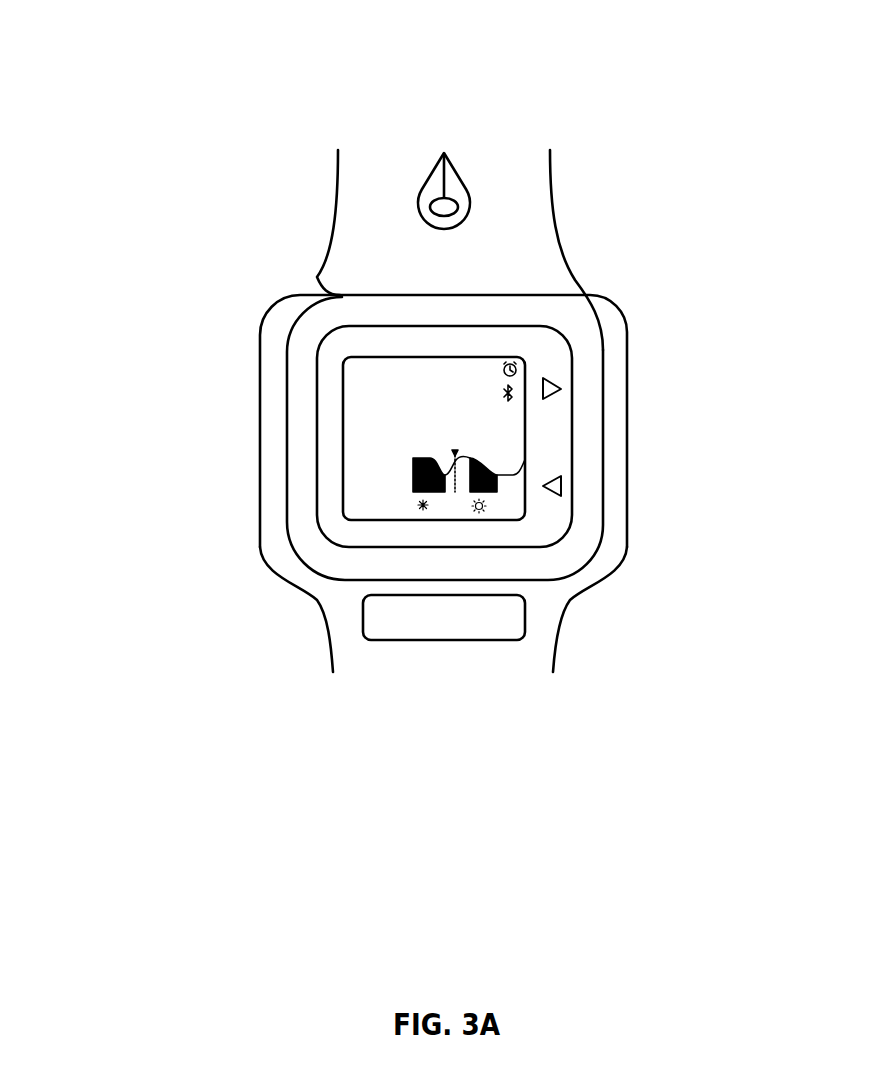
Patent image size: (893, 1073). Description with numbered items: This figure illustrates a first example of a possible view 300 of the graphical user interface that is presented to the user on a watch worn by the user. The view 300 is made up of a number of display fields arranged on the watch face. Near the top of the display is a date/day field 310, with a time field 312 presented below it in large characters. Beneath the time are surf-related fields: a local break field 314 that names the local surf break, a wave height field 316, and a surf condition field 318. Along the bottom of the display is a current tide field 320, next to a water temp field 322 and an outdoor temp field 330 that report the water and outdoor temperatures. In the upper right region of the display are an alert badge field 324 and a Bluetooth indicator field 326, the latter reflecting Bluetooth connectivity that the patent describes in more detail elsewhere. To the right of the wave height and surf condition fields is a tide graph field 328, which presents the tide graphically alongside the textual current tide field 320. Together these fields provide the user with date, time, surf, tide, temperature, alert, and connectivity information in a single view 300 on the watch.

The view 300 is at (607, 86).
The date/day field 310 is at (397, 360).
The time field 312 is at (387, 383).
The local break field 314 is at (353, 430).
The wave height field 316 is at (352, 457).
The surf condition field 318 is at (350, 478).
The current tide field 320 is at (347, 503).
The water temp field 322 is at (418, 512).
The alert badge field 324 is at (517, 360).
The Bluetooth indicator field 326 is at (515, 387).
The tide graph field 328 is at (509, 480).
The outdoor temp field 330 is at (512, 513).